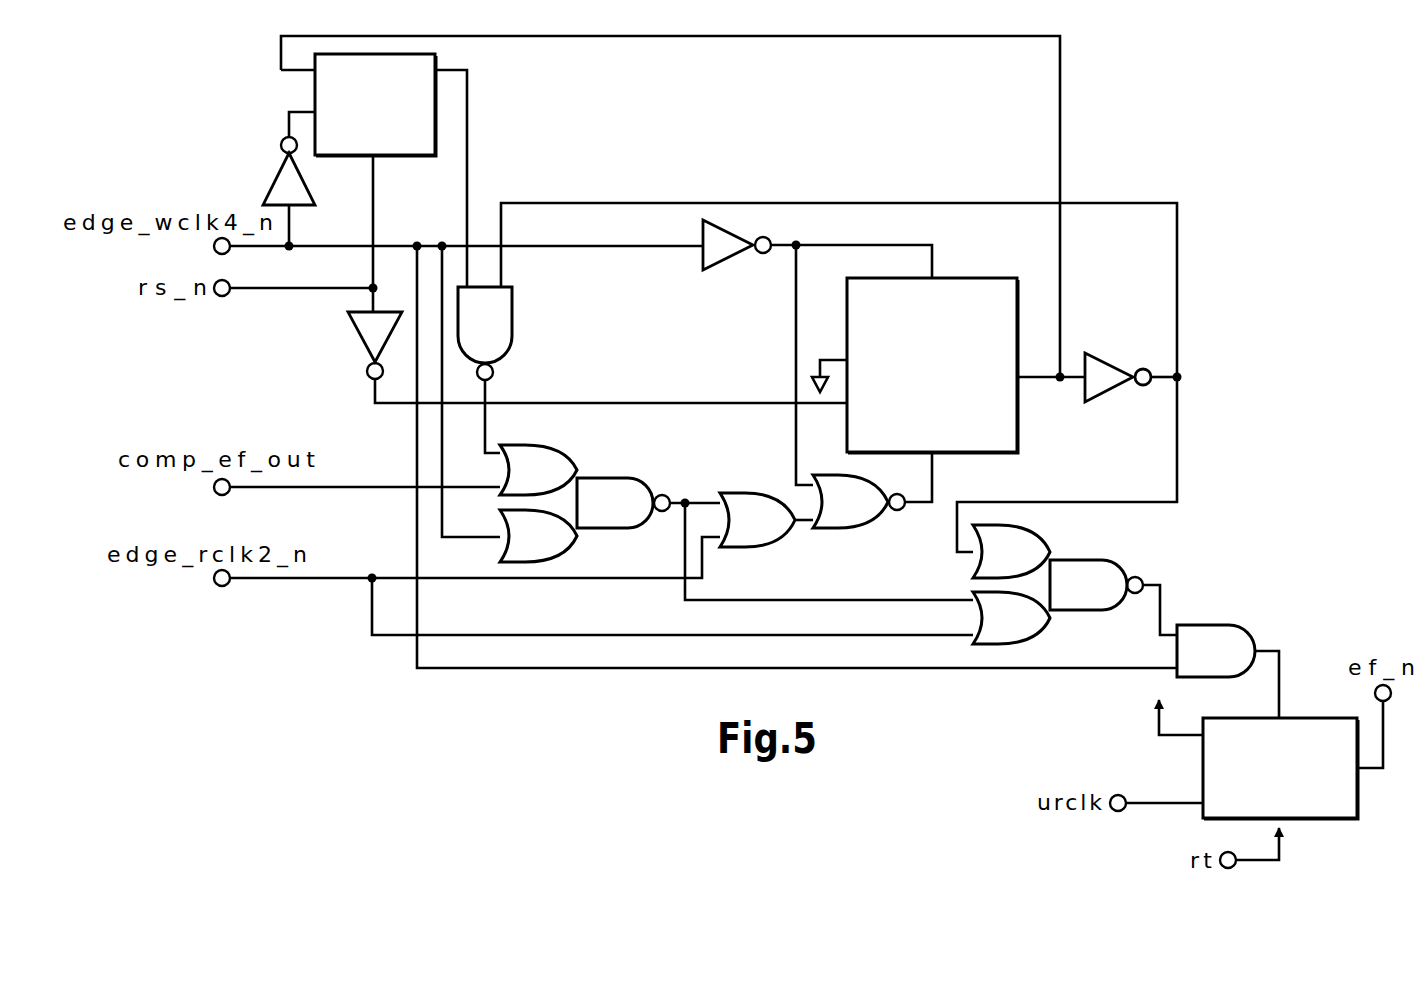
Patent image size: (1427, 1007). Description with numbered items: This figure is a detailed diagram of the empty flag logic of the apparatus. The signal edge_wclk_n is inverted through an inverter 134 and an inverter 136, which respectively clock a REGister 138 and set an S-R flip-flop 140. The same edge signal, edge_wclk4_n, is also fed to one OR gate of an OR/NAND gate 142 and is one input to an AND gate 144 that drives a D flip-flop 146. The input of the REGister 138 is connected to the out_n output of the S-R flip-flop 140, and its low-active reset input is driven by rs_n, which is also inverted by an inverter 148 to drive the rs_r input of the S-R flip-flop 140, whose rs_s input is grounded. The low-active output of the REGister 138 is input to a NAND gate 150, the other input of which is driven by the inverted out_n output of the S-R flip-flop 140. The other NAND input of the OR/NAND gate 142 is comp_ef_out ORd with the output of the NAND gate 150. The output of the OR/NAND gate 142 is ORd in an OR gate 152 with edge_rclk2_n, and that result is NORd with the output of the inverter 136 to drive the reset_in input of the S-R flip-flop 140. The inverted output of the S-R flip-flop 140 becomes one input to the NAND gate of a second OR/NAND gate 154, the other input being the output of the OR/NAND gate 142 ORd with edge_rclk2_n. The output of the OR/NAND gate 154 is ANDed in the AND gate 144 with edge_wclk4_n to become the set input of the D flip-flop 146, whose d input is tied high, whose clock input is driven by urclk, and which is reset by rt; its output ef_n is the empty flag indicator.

The inverter 134 is at (272, 187).
The inverter 136 is at (733, 262).
The REGister 138 is at (420, 157).
The S-R flip-flop 140 is at (993, 278).
The OR/NAND gate 142 is at (608, 460).
The AND gate 144 is at (1213, 625).
The D flip-flop 146 is at (1312, 821).
The inverter 148 is at (358, 342).
The NAND gate 150 is at (513, 325).
The OR gate 152 is at (781, 554).
The OR/NAND gate 154 is at (1091, 546).